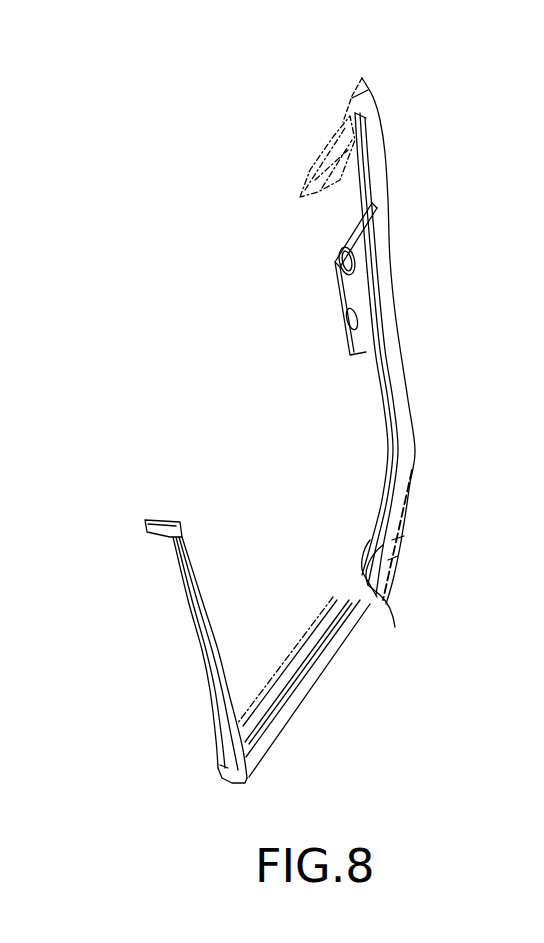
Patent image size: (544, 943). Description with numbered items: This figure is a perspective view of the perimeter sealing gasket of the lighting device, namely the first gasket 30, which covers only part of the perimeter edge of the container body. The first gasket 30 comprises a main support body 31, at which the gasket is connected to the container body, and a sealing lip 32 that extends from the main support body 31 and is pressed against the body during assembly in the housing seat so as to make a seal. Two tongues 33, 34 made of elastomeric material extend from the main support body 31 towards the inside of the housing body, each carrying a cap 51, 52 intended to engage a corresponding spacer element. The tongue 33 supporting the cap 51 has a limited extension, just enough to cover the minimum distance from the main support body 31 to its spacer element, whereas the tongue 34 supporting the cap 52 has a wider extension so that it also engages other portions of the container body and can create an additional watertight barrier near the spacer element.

The first gasket 30 is at (204, 355).
The main support body 31 is at (376, 395).
The sealing lip 32 is at (408, 457).
The tongue 33 is at (392, 620).
The tongue 34 is at (333, 297).
The cap 51 is at (398, 547).
The cap 52 is at (355, 260).